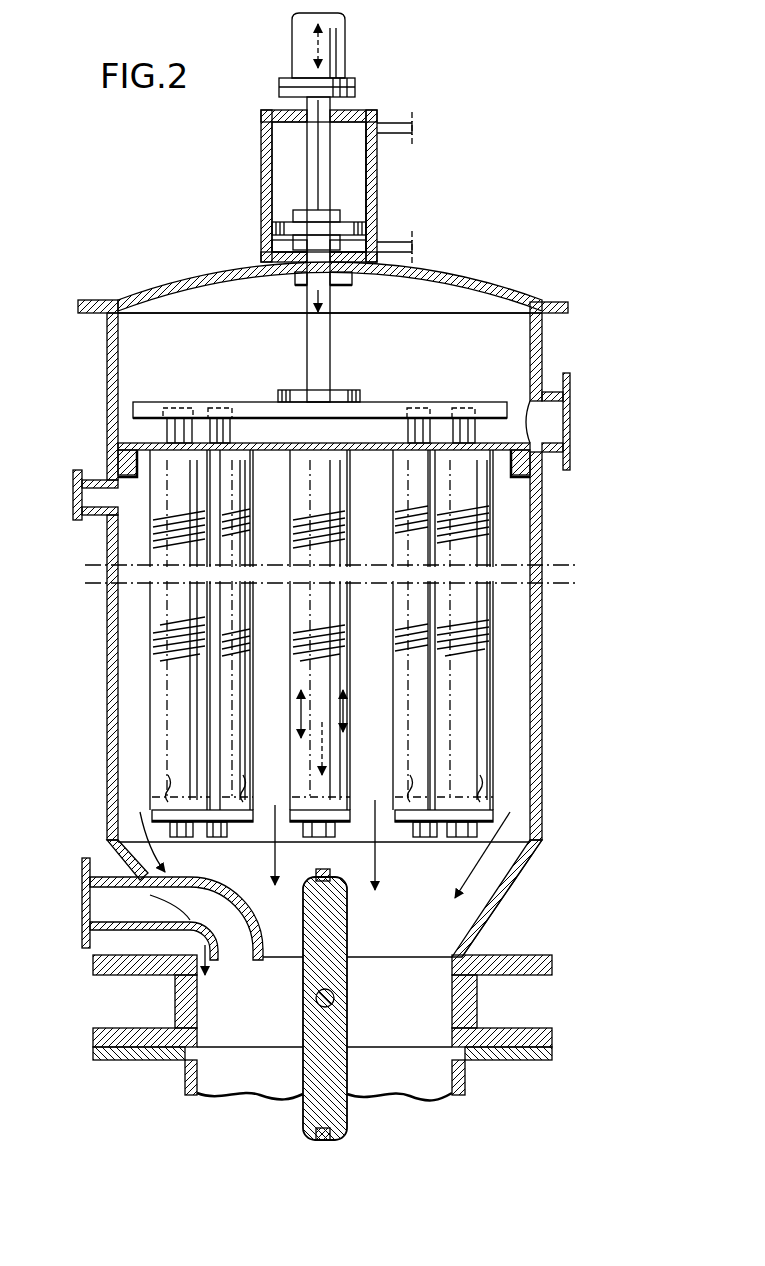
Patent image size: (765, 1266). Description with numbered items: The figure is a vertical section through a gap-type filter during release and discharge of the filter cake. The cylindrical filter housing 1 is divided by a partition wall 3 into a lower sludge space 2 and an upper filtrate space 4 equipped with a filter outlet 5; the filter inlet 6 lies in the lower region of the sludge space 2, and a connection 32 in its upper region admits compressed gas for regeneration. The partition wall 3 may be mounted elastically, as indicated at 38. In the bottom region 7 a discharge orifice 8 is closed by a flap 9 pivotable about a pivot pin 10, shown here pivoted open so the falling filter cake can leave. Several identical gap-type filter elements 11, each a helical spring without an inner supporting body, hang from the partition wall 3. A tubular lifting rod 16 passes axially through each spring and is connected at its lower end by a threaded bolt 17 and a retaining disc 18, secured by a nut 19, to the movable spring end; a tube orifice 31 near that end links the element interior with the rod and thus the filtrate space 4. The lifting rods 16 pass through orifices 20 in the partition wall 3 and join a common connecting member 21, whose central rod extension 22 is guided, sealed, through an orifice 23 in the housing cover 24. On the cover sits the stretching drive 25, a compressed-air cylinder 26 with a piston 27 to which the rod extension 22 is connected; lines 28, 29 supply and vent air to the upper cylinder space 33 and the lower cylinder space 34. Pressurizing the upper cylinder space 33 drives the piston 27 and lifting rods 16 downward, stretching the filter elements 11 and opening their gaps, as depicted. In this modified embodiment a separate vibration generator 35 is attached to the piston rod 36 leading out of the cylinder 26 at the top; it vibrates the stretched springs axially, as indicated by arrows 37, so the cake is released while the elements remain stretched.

The filter housing 1 is at (543, 522).
The sludge space 2 is at (522, 685).
The partition wall 3 is at (130, 443).
The filtrate space 4 is at (520, 359).
The filter outlet 5 is at (570, 394).
The filter inlet 6 is at (84, 897).
The bottom region 7 is at (512, 893).
The discharge orifice 8 is at (465, 946).
The flap 9 is at (340, 1038).
The pivot pin 10 is at (335, 1003).
The gap-type filter elements 11 is at (215, 693).
The tubular lifting rod 16 is at (222, 430).
The threaded bolt 17 is at (460, 842).
The retaining disc 18 is at (248, 824).
The nut 19 is at (205, 826).
The orifice 20 is at (152, 440).
The connecting member 21 is at (370, 413).
The rod extension 22 is at (332, 354).
The orifice 23 is at (466, 279).
The housing cover 24 is at (298, 285).
The stretching drive 25 is at (380, 191).
The cylinder 26 is at (262, 180).
The piston 27 is at (366, 225).
The compressed-air inflow and flow-off line 28 is at (410, 127).
The compressed-air inflow and flow-off line 29 is at (412, 248).
The tube orifice 31 is at (168, 796).
The connection 32 is at (100, 504).
The upper cylinder space 33 is at (352, 167).
The cylinder space 34 is at (272, 248).
The vibration generator 35 is at (338, 31).
The piston rod 36 is at (318, 111).
The arrows 37 is at (325, 742).
The elastic mounting 38 is at (118, 461).